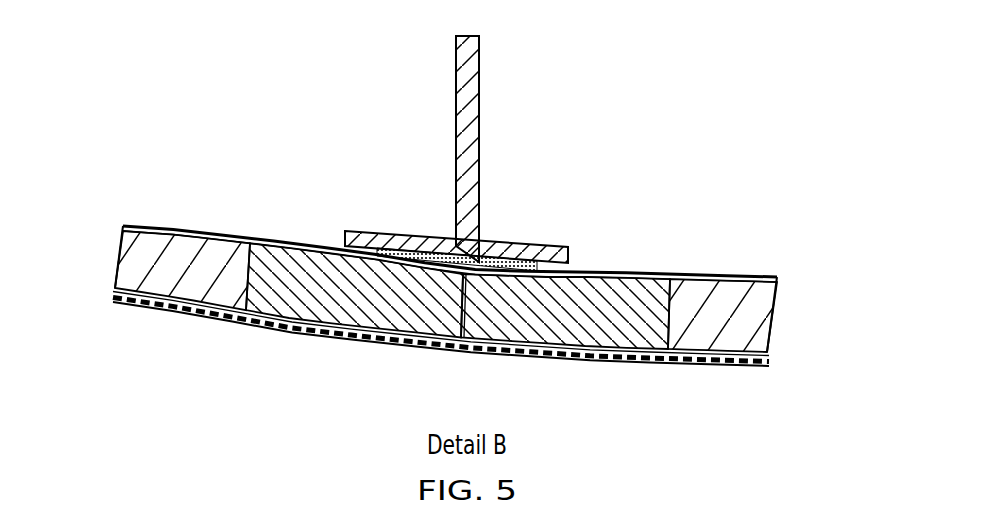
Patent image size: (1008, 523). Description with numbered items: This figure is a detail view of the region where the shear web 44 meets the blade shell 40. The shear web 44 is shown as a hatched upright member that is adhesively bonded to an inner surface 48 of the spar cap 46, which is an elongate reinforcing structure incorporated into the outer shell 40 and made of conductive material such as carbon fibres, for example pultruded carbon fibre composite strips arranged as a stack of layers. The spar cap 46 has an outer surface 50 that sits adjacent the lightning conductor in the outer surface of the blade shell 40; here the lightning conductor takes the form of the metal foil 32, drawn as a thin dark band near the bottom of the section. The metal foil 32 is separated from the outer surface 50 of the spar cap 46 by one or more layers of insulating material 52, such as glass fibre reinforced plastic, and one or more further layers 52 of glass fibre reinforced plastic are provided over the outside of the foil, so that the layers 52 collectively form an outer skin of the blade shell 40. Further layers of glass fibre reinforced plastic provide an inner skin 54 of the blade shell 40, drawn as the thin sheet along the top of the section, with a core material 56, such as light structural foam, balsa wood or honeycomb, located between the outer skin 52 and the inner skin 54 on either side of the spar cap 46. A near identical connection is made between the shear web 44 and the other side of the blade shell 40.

The blade shell 40 is at (143, 223).
The inner skin 54 is at (760, 265).
The core material 56 is at (146, 273).
The outer surface of the spar cap 50 is at (300, 323).
The spar cap 46 is at (615, 300).
The shear web 44 is at (480, 47).
The inner surface of the spar cap 48 is at (557, 280).
The metal foil 32 is at (335, 345).
The layers of insulating material 52 is at (775, 357).